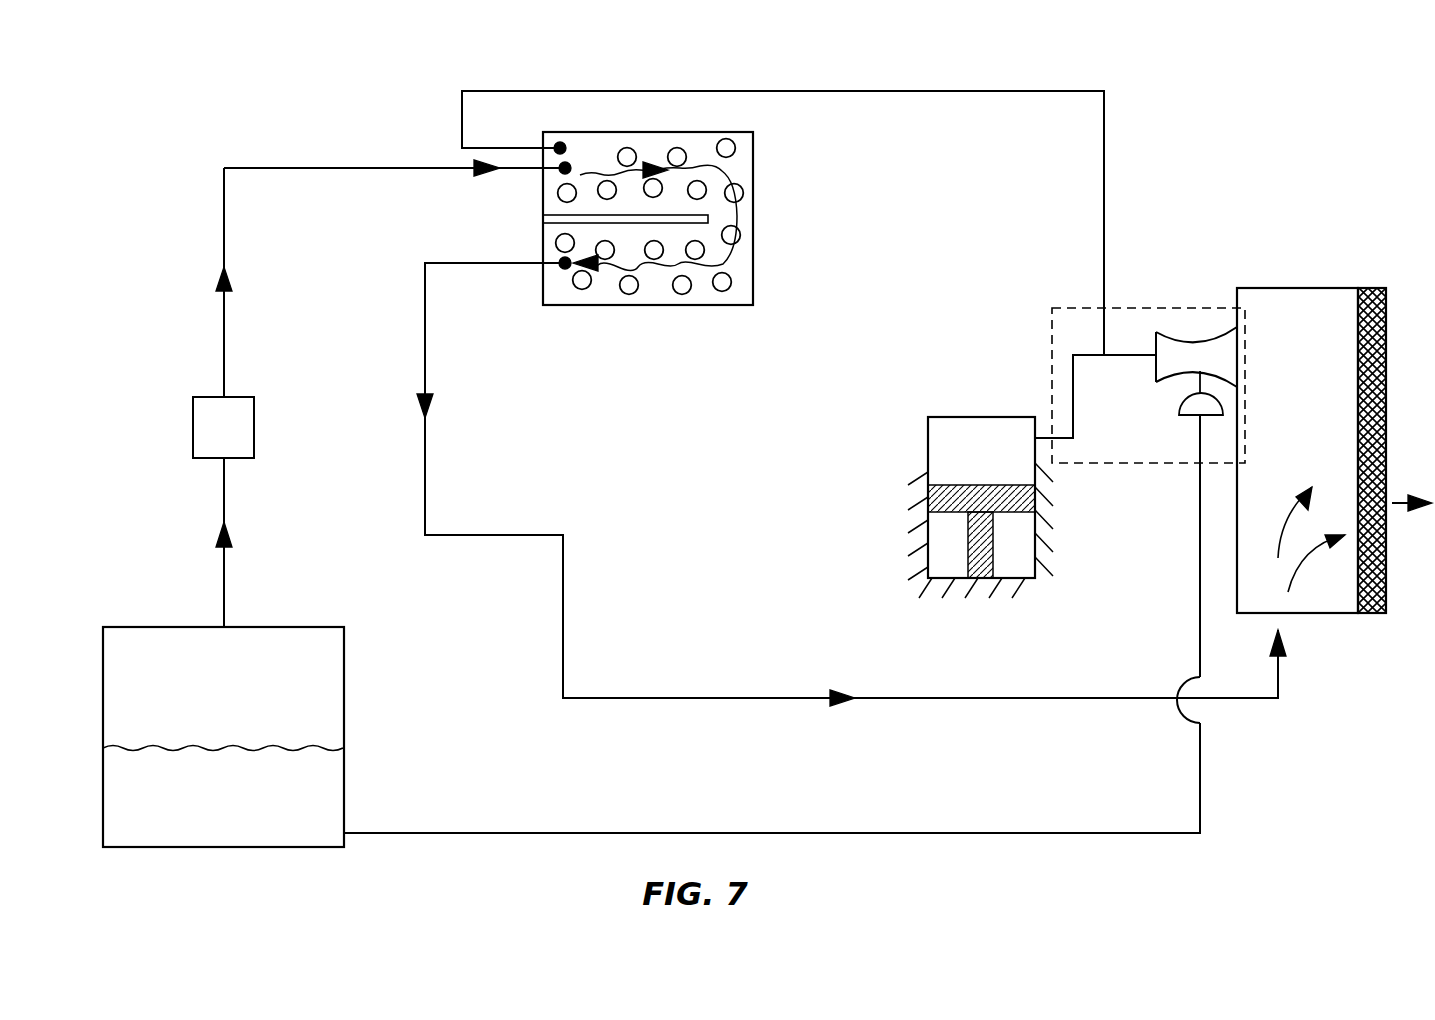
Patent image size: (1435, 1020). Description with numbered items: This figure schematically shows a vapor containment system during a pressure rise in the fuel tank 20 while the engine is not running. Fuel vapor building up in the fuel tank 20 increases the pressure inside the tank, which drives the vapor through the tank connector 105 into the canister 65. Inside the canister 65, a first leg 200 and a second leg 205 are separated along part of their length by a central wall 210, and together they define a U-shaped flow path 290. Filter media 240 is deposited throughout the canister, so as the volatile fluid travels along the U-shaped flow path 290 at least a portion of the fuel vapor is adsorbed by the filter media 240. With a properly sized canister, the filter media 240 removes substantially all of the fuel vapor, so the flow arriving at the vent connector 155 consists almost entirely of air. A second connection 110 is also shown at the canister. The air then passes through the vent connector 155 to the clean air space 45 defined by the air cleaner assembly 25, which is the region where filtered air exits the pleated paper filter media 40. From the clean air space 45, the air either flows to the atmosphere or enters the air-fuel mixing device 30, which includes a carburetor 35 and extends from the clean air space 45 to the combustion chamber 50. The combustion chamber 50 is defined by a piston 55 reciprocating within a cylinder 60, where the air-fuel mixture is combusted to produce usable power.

The fuel tank 20 is at (328, 703).
The air cleaner assembly 25 is at (1292, 288).
The air-fuel mixing device 30 is at (1083, 303).
The carburetor 35 is at (1158, 330).
The pleated paper filter media 40 is at (1385, 583).
The clean air space 45 is at (1283, 364).
The combustion chamber 50 is at (995, 417).
The piston 55 is at (928, 495).
The cylinder 60 is at (942, 567).
The canister 65 is at (757, 283).
The tank connector 105 is at (520, 172).
The return line 110 is at (505, 148).
The vent connector 155 is at (530, 267).
The first leg 200 is at (648, 143).
The second leg 205 is at (655, 297).
The central wall 210 is at (553, 225).
The filter media 240 is at (737, 193).
The U-shaped flow path 290 is at (697, 167).